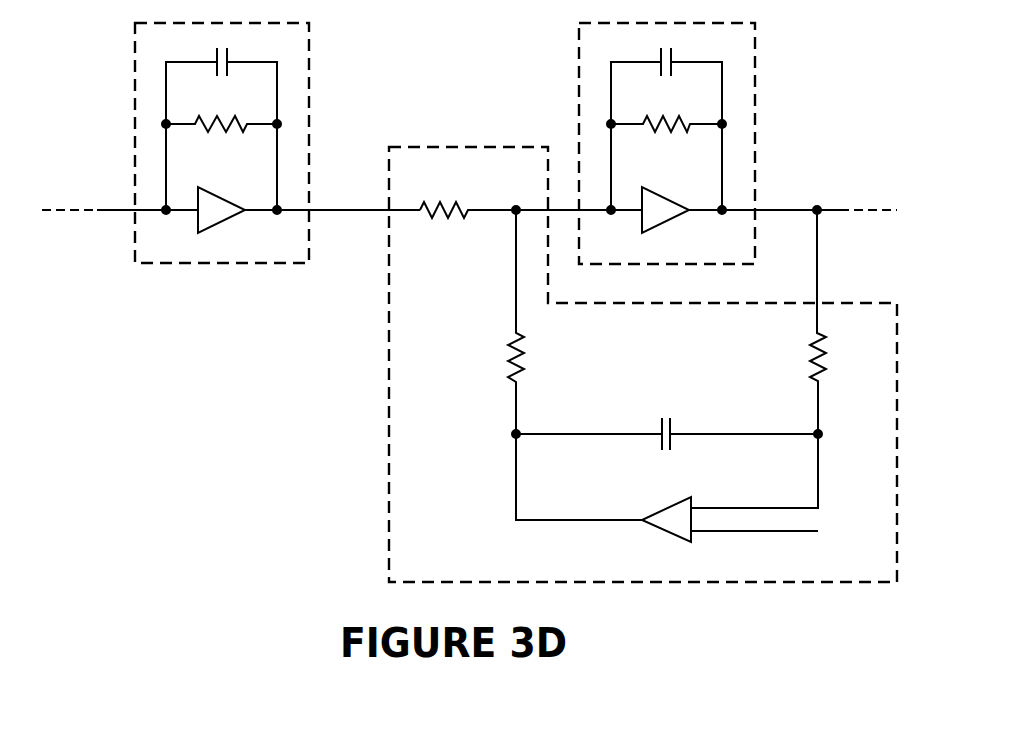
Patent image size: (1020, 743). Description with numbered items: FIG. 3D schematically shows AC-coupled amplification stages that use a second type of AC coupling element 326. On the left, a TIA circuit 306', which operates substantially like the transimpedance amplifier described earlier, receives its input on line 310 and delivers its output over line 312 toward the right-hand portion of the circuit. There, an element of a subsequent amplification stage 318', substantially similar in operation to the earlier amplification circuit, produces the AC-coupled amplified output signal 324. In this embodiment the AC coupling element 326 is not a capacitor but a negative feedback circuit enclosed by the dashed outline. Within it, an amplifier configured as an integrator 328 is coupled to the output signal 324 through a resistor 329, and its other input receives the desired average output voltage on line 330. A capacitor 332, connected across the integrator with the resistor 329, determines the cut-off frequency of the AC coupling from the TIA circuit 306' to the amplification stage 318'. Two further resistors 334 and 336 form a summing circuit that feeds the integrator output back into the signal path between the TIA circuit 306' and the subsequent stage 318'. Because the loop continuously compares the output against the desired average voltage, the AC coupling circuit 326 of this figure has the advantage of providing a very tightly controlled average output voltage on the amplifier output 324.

The TIA circuit 306' is at (222, 175).
The input line 310 is at (100, 210).
The connection line 312 is at (340, 210).
The subsequent amplification stage 318' is at (631, 143).
The output signal 324 is at (770, 210).
The AC coupling element 326 is at (389, 366).
The integrator 328 is at (665, 540).
The resistor 329 is at (807, 362).
The VOUTB input line 330 is at (797, 532).
The capacitor 332 is at (668, 422).
The resistor 334 is at (452, 197).
The resistor 336 is at (505, 362).